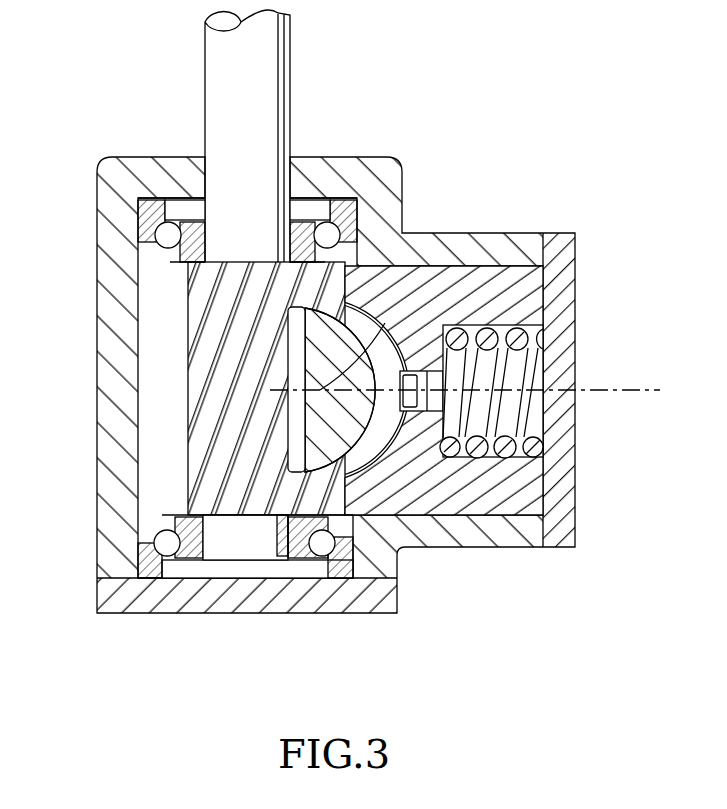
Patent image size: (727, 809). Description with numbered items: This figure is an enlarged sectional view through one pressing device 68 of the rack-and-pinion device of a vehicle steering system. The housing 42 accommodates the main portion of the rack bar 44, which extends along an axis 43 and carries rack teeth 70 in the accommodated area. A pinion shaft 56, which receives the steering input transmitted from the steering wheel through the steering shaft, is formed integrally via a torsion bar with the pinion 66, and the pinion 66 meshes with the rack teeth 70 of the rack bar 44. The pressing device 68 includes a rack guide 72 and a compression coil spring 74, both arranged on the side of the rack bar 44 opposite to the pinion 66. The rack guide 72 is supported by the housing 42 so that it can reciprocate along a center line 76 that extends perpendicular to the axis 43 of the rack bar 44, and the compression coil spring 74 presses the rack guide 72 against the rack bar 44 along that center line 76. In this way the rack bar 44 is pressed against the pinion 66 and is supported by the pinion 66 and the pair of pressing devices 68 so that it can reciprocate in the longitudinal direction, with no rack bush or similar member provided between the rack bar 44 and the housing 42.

The housing 42 is at (103, 228).
The axis 43 is at (322, 385).
The rack bar 44 is at (363, 428).
The pinion shaft 56 is at (205, 68).
The pinion 66 is at (200, 375).
The pressing device 68 is at (534, 195).
The rack teeth 70 is at (297, 428).
The rack guide 72 is at (527, 296).
The compression coil spring 74 is at (532, 418).
The center line 76 is at (610, 384).